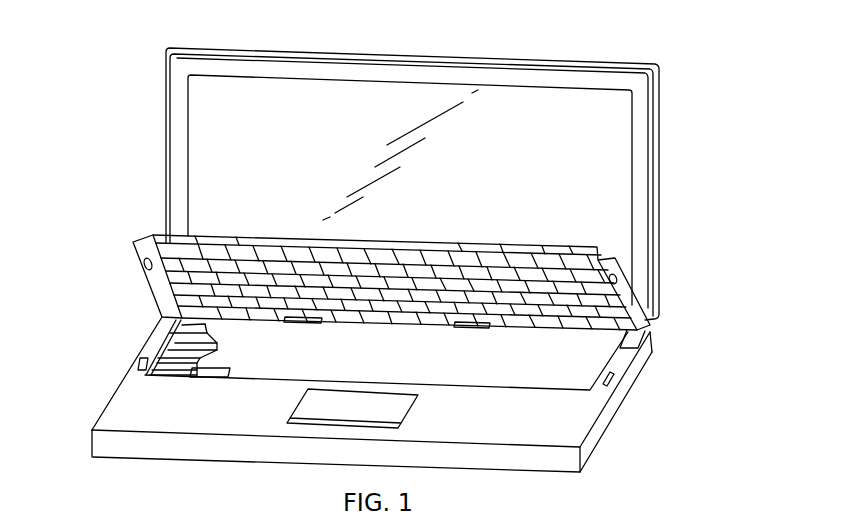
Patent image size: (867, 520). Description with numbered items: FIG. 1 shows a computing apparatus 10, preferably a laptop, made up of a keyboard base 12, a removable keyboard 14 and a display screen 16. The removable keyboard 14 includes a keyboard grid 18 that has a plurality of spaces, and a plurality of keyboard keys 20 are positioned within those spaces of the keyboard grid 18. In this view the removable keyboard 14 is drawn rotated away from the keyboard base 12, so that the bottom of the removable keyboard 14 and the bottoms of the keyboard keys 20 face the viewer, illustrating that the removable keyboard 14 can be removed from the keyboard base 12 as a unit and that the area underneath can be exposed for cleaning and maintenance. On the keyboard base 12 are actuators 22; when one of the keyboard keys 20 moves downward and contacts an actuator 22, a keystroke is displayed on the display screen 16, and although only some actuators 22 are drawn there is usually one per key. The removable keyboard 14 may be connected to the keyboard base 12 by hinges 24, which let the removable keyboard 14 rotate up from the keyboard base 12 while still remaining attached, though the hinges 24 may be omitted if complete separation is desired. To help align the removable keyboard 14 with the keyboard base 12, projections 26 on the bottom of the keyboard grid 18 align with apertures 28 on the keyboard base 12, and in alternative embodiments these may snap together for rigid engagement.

The computing apparatus 10 is at (135, 61).
The keyboard base 12 is at (618, 407).
The removable keyboard 14 is at (143, 298).
The display screen 16 is at (591, 53).
The keyboard grid 18 is at (630, 312).
The keyboard keys 20 is at (272, 262).
The actuators 22 is at (236, 372).
The hinges 24 is at (473, 328).
The projections 26 is at (147, 257).
The apertures 28 is at (137, 363).